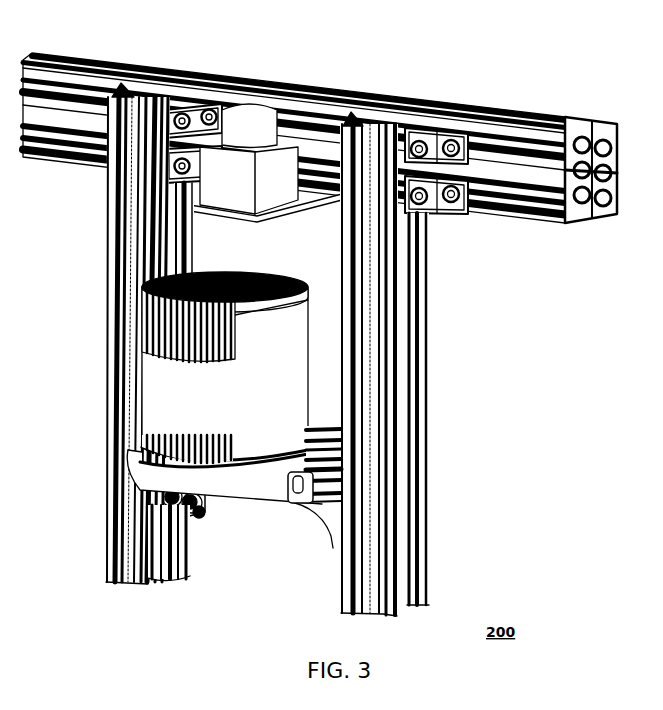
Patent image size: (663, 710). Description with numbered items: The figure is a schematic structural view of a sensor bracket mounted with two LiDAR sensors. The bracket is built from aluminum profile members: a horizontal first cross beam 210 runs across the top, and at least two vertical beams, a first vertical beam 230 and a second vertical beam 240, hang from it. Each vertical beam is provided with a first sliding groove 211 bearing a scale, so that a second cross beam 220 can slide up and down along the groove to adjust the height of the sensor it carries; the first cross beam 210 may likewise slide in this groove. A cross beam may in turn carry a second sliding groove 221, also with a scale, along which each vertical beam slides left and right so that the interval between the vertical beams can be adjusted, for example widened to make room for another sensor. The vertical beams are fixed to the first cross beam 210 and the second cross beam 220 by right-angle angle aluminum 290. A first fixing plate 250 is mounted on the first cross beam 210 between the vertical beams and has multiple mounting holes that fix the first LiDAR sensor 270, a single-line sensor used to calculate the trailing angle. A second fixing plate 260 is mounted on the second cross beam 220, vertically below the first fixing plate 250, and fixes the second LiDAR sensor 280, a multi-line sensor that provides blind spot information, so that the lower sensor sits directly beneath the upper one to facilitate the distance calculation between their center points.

The first cross beam 210 is at (541, 118).
The first sliding groove 211 is at (160, 573).
The second cross beam 220 is at (333, 492).
The second sliding groove 221 is at (563, 203).
The first vertical beam 230 is at (114, 238).
The second vertical beam 240 is at (413, 340).
The first fixing plate 250 is at (317, 204).
The second fixing plate 260 is at (255, 485).
The first LiDAR sensor 270 is at (258, 137).
The second LiDAR sensor 280 is at (163, 390).
The right-angle angle aluminum 290 is at (195, 112).